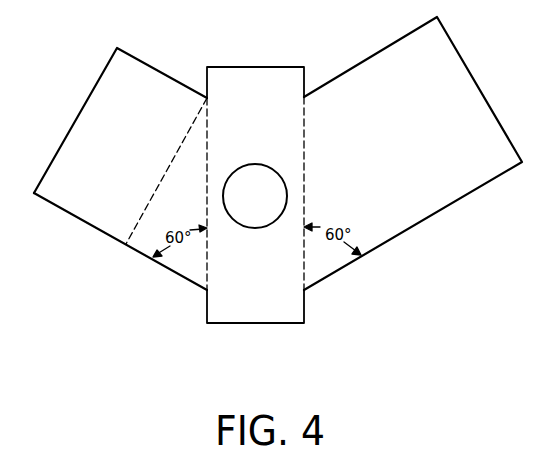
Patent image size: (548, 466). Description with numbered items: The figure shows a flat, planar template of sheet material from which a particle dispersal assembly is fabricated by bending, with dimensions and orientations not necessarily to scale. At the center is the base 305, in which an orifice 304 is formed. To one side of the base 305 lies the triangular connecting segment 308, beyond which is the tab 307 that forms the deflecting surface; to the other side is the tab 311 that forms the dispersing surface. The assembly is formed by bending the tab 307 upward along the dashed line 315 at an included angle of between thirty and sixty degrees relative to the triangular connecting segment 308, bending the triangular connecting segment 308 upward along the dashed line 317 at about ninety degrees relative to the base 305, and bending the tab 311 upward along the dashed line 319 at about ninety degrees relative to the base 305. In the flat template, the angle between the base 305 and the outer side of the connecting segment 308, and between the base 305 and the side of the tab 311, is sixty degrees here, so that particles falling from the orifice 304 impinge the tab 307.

The orifice 304 is at (256, 164).
The base 305 is at (260, 87).
The tab 307 is at (133, 150).
The triangular connecting segment 308 is at (148, 232).
The tab 311 is at (429, 136).
The dashed line 315 is at (185, 130).
The dashed line 317 is at (207, 262).
The dashed line 319 is at (304, 262).